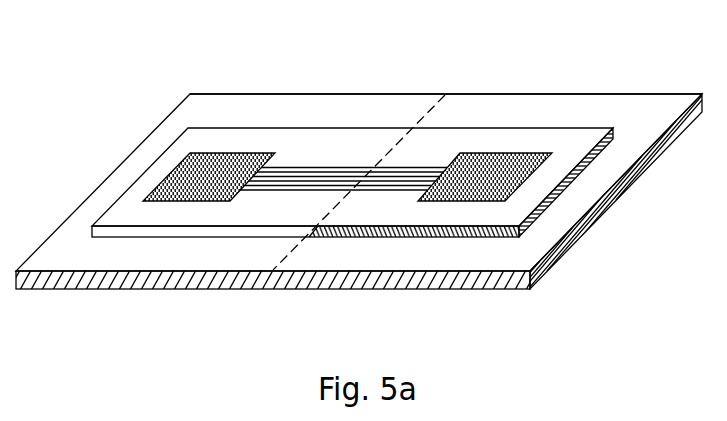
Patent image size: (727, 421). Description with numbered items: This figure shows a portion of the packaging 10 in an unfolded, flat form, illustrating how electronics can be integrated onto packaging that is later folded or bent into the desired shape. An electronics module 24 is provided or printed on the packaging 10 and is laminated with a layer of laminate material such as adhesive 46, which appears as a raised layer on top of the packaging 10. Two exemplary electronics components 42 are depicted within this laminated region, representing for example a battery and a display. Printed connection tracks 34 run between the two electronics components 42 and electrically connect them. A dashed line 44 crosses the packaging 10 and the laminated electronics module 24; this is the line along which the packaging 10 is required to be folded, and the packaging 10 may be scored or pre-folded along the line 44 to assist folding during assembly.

The packaging 10 is at (283, 107).
The electronics module 24 is at (222, 114).
The printed connection tracks 34 is at (338, 163).
The electronics components 42 is at (192, 188).
The fold line 44 is at (300, 242).
The adhesive 46 is at (492, 138).